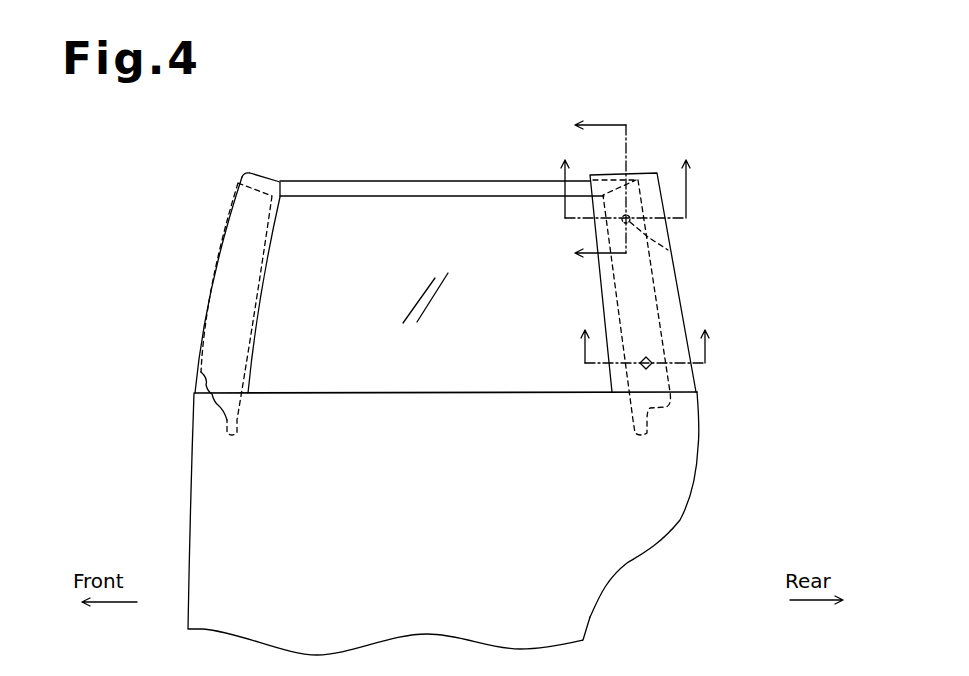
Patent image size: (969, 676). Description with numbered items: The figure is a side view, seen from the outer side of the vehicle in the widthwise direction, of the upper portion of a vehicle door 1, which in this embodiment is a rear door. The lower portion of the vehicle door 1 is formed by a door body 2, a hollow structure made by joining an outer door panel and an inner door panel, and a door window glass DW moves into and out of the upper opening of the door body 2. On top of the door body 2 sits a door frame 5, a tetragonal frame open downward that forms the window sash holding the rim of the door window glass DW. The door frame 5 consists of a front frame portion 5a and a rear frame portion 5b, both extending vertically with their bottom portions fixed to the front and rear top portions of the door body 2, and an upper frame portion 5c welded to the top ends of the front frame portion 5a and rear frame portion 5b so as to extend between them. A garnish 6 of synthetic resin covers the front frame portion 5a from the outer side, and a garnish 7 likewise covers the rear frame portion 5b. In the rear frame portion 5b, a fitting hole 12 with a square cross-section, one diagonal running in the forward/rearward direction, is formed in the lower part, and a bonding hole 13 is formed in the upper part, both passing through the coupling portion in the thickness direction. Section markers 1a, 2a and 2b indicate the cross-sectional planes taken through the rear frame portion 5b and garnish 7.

The vehicle door 1 is at (213, 477).
The door body 2 is at (205, 527).
The door frame 5 is at (397, 187).
The front frame portion 5a is at (258, 262).
The rear frame portion 5b is at (675, 283).
The upper frame portion 5c is at (425, 192).
The garnish 6 is at (210, 290).
The garnish 7 is at (602, 290).
The fitting hole 12 is at (650, 366).
The bonding hole 13 is at (668, 250).
The door window glass DW is at (338, 215).
The section line 1a- 1a is at (645, 334).
The section line 2a- 2a is at (623, 178).
The section line 2b- 2b is at (583, 191).